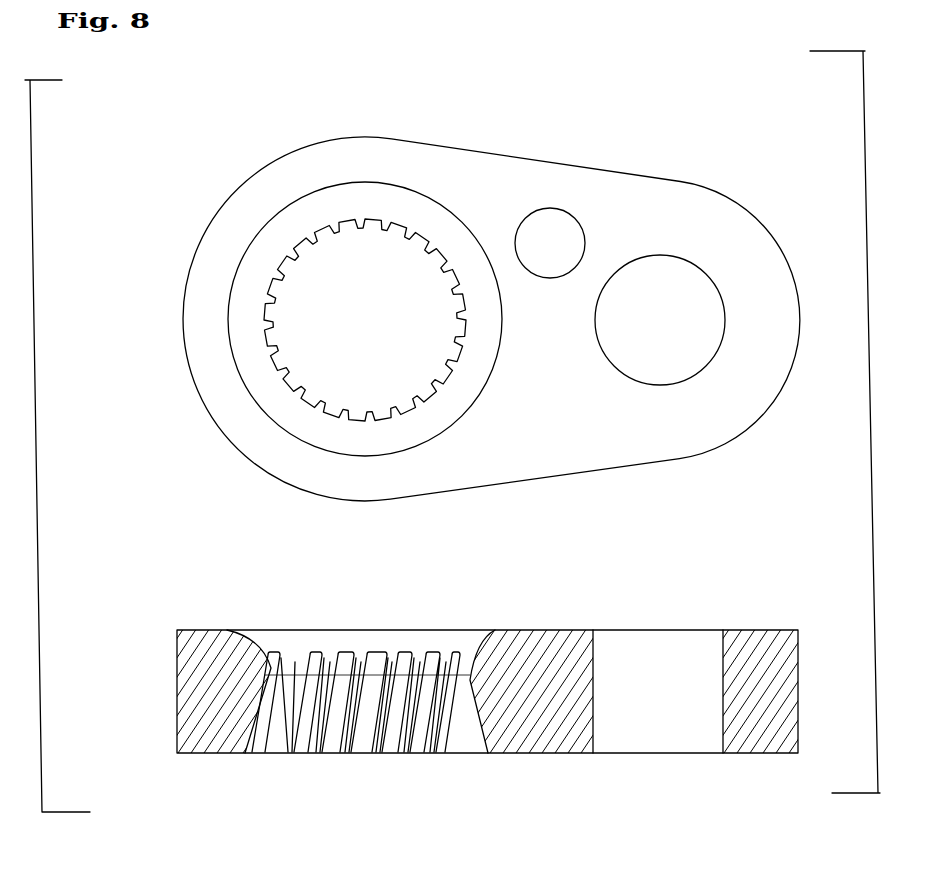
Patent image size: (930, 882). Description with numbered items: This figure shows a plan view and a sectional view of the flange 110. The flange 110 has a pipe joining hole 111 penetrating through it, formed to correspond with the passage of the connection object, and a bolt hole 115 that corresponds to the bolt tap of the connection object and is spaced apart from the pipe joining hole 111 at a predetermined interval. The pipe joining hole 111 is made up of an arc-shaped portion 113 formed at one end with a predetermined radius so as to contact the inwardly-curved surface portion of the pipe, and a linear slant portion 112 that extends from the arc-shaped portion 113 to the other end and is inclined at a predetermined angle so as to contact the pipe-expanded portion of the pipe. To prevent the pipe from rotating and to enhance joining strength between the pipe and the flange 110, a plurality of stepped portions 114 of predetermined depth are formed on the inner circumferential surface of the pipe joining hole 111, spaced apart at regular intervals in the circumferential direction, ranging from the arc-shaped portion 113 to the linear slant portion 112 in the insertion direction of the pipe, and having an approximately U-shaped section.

The flange 110 is at (538, 160).
The pipe joining hole 111 is at (320, 368).
The linear slant portion 112 is at (260, 688).
The arc-shaped portion 113 is at (245, 334).
The stepped portions 114 is at (412, 233).
The bolt hole 115 is at (660, 255).